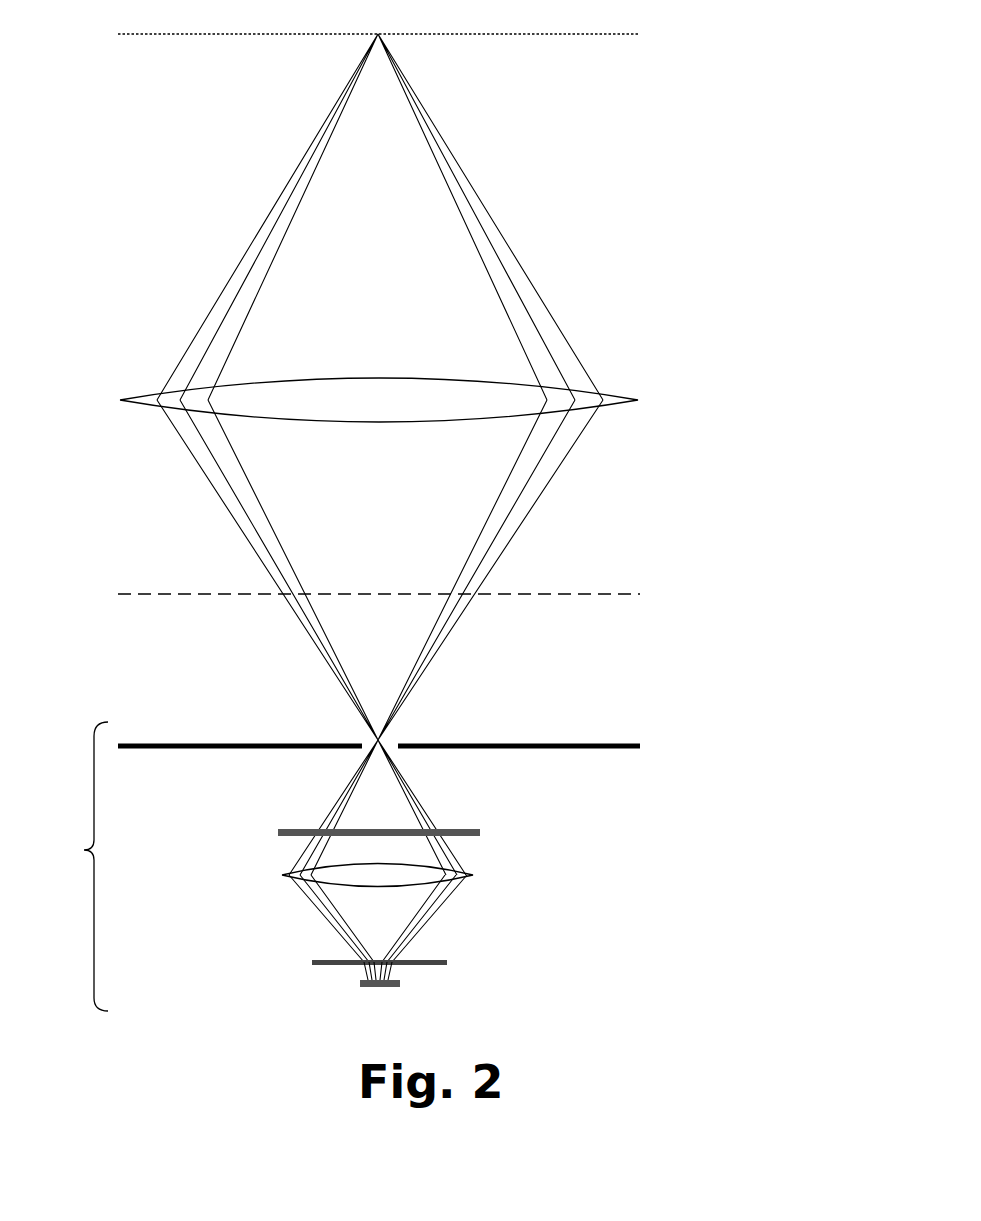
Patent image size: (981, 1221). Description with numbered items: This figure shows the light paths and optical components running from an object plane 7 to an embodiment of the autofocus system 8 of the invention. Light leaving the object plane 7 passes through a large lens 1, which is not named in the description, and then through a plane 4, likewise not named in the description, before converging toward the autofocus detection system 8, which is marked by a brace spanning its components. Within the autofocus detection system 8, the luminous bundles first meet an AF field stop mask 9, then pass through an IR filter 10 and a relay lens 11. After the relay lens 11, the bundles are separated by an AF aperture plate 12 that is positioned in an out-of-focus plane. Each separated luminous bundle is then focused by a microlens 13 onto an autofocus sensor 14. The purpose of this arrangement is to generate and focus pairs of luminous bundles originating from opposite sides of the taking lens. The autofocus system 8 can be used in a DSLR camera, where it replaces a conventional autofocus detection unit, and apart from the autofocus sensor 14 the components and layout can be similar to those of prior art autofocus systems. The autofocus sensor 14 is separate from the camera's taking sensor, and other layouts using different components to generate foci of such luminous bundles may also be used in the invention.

The object plane 7 is at (130, 35).
The objective lens 1 is at (137, 403).
The intermediate plane 4 is at (150, 596).
The autofocus system 8 is at (347, 874).
The AF field stop mask 9 is at (415, 749).
The IR filter 10 is at (465, 838).
The relay lens 11 is at (470, 880).
The AF aperture plate 12 is at (445, 959).
The microlens 13 is at (358, 968).
The autofocus sensor 14 is at (388, 988).